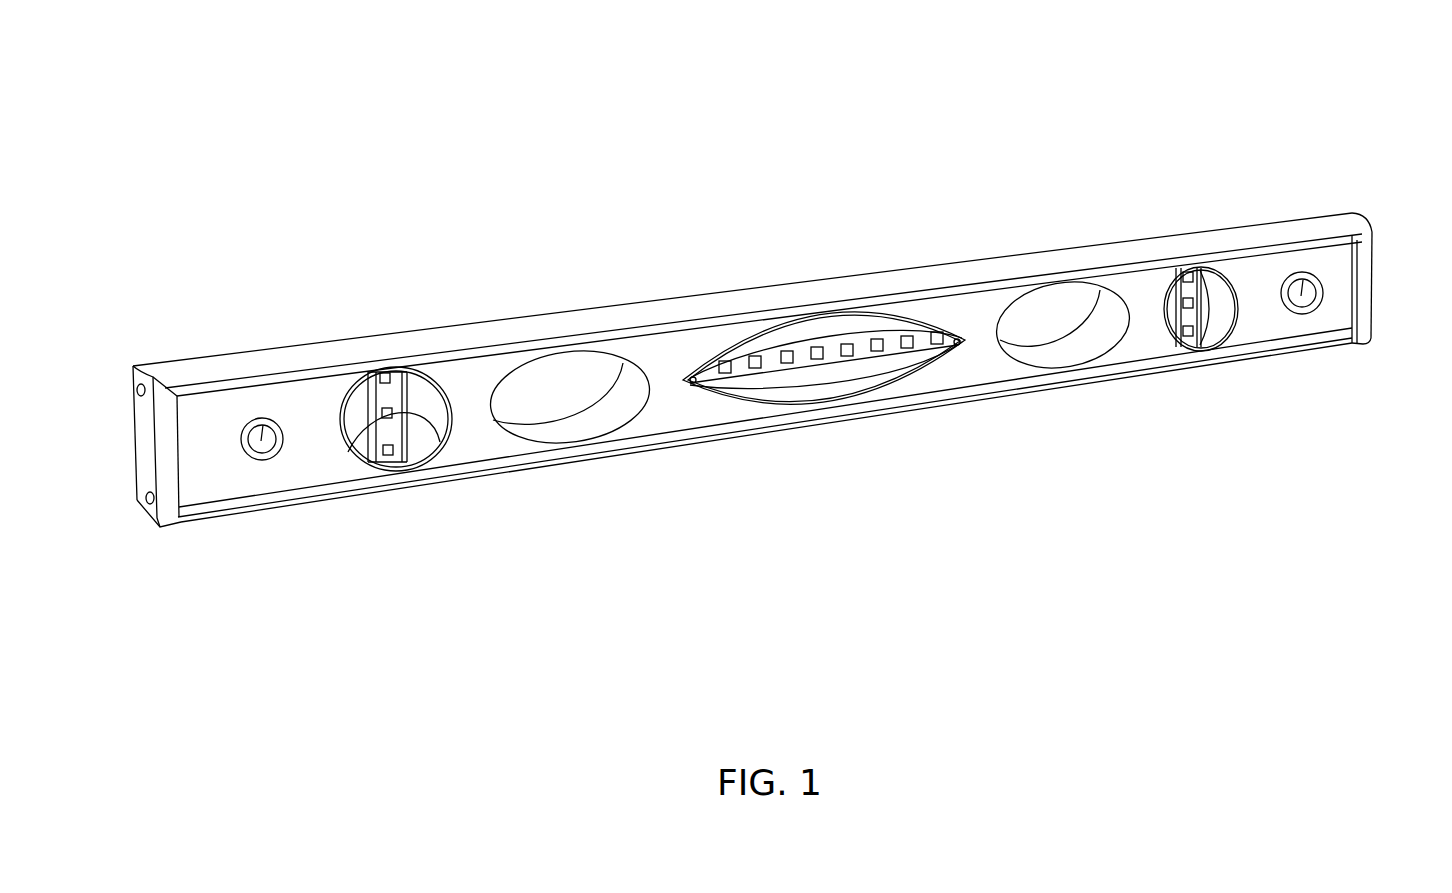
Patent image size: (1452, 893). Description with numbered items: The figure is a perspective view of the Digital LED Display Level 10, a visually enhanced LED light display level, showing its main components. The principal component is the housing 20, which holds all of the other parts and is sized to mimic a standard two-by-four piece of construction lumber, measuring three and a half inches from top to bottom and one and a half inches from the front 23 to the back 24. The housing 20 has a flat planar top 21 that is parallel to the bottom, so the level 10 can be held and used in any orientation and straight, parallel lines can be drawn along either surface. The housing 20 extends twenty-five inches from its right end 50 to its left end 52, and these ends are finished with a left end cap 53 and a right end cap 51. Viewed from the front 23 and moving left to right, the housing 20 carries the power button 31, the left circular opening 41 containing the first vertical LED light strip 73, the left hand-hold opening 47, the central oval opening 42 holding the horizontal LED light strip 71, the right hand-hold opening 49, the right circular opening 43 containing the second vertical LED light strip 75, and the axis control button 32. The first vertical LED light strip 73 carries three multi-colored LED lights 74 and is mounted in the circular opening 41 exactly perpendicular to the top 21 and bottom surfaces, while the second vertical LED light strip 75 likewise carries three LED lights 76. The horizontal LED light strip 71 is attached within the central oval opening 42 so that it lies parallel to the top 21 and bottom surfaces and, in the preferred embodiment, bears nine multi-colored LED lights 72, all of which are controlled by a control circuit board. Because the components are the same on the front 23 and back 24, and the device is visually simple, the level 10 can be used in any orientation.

The level 10 is at (1165, 66).
The housing 20 is at (472, 367).
The top 21 is at (314, 358).
The front 23 is at (643, 215).
The back 24 is at (912, 170).
The power button 31 is at (270, 450).
The axis control button 32 is at (1303, 306).
The left circular opening 41 is at (405, 380).
The central oval opening 42 is at (822, 330).
The right circular opening 43 is at (1220, 287).
The left hand-hold opening 47 is at (543, 382).
The right hand-hold opening 49 is at (1048, 307).
The right end 50 is at (1353, 212).
The right end cap 51 is at (1368, 270).
The left end 52 is at (147, 360).
The left end cap 53 is at (143, 427).
The horizontal LED light strip 71 is at (743, 368).
The multi-colored LED lights 72 is at (853, 356).
The first vertical LED light strip 73 is at (380, 432).
The multi-colored LED lights 74 is at (437, 447).
The second vertical LED light strip 75 is at (1183, 284).
The LED lights 76 is at (1187, 350).